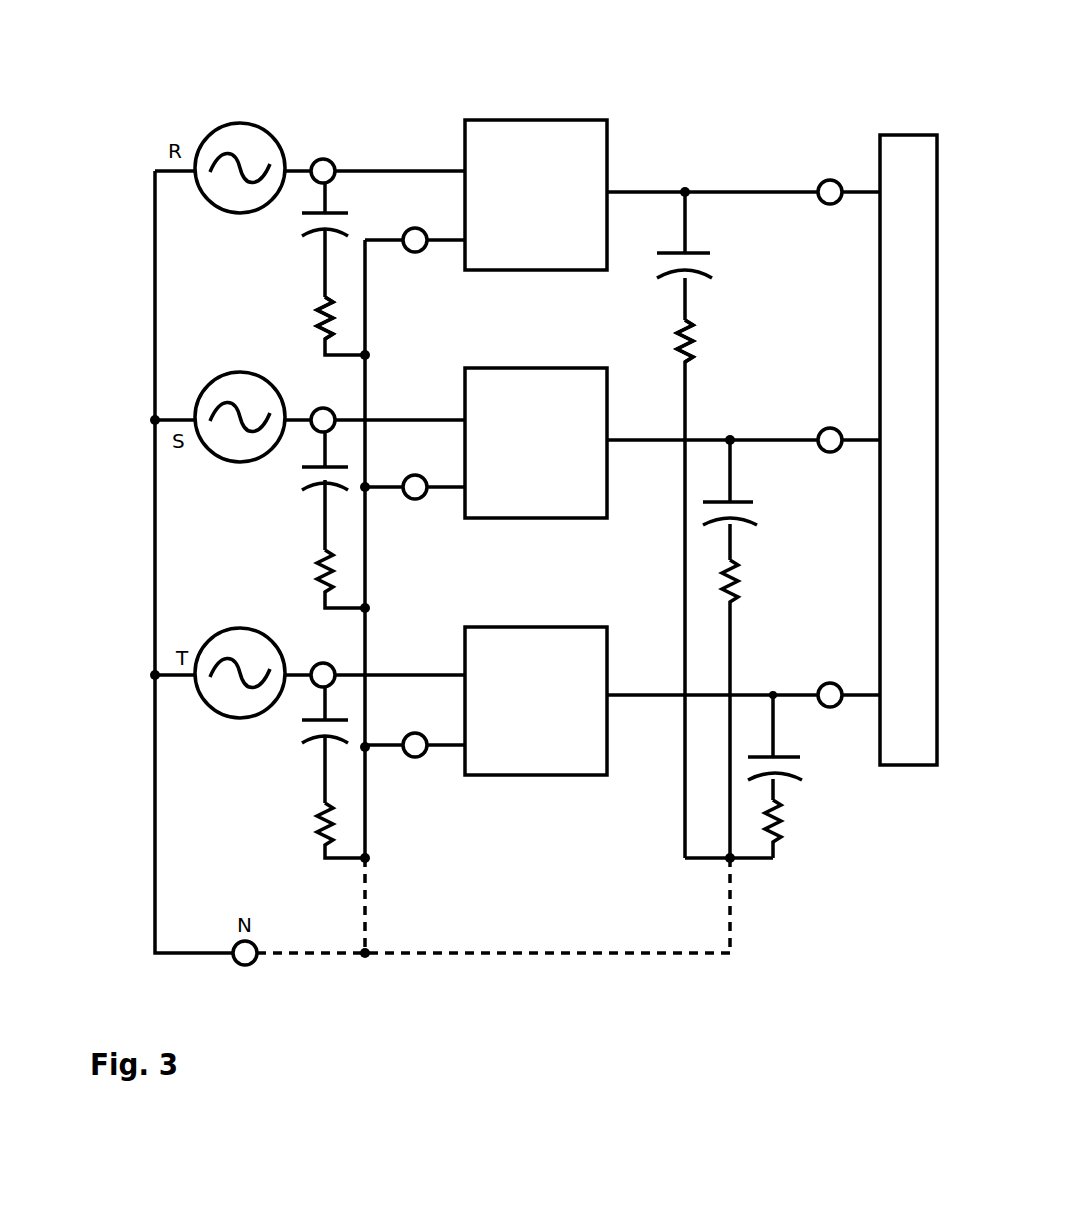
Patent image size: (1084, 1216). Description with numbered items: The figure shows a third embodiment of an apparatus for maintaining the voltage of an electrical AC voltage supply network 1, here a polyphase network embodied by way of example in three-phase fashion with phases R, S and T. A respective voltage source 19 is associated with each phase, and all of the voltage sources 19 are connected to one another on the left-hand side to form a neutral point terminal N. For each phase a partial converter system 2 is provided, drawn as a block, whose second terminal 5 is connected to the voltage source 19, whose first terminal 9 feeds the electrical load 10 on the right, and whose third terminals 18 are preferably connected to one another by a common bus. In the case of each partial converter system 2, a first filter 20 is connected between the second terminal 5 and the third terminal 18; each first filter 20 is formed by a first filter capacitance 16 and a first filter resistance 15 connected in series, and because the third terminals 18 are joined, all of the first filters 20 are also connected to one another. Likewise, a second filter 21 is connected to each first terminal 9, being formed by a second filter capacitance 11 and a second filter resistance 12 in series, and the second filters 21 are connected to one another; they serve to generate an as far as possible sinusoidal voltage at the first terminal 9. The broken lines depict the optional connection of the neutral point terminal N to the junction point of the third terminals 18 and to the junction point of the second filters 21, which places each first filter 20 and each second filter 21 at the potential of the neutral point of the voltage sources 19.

The electrical AC voltage supply network 1 is at (135, 128).
The partial converter system 2 is at (480, 367).
The second terminal 5 is at (321, 160).
The first terminal 9 is at (823, 181).
The electrical load 10 is at (903, 133).
The second filter capacitance 11 is at (672, 250).
The second filter resistance 12 is at (687, 338).
The first filter resistance 15 is at (313, 322).
The first filter capacitance 16 is at (348, 213).
The third terminal 18 is at (414, 476).
The voltage source 19 is at (228, 122).
The first filter 20 is at (292, 270).
The second filter 21 is at (730, 307).